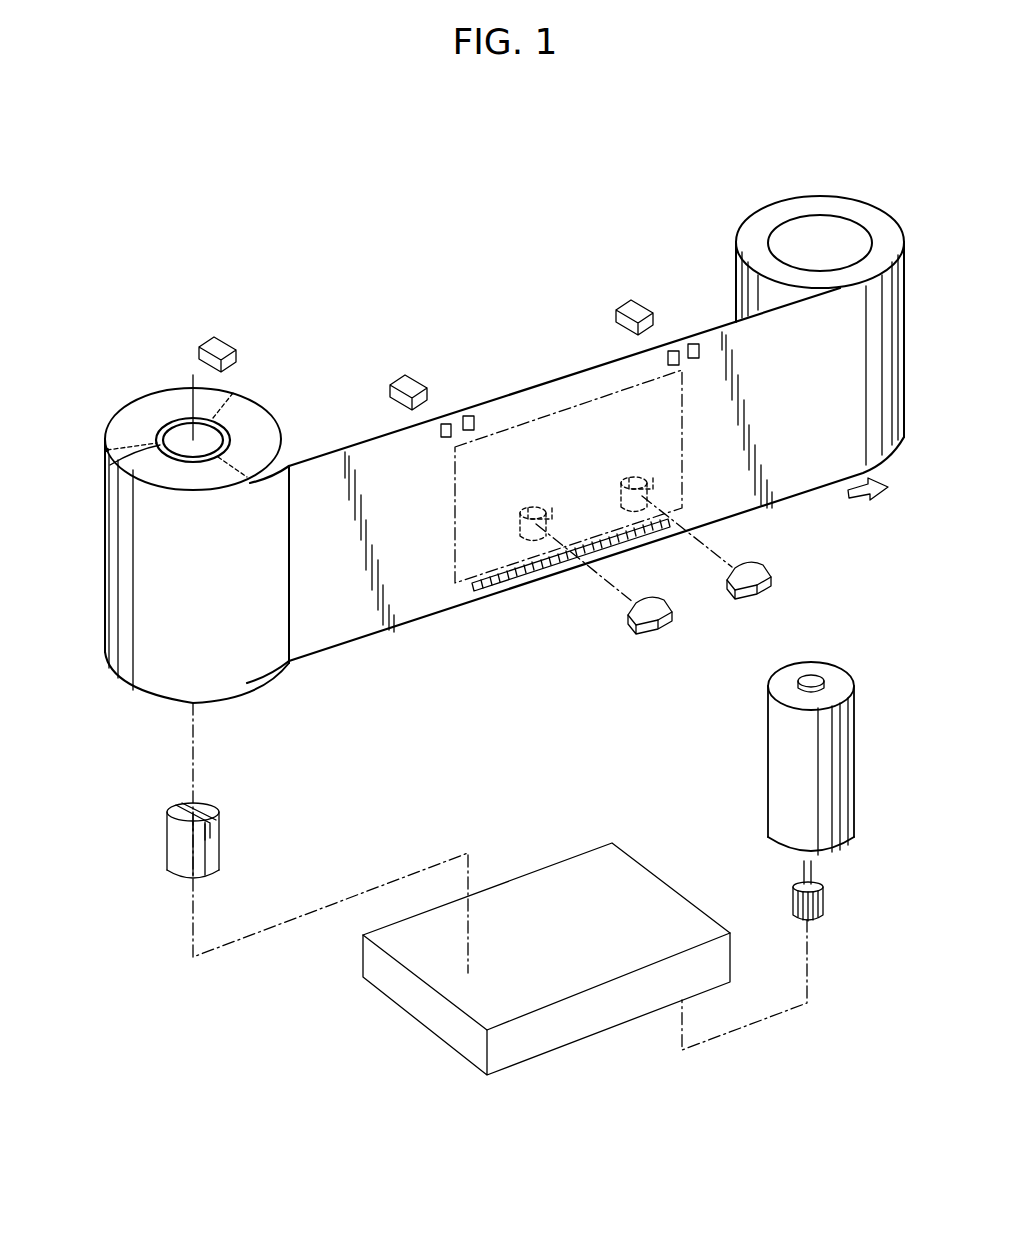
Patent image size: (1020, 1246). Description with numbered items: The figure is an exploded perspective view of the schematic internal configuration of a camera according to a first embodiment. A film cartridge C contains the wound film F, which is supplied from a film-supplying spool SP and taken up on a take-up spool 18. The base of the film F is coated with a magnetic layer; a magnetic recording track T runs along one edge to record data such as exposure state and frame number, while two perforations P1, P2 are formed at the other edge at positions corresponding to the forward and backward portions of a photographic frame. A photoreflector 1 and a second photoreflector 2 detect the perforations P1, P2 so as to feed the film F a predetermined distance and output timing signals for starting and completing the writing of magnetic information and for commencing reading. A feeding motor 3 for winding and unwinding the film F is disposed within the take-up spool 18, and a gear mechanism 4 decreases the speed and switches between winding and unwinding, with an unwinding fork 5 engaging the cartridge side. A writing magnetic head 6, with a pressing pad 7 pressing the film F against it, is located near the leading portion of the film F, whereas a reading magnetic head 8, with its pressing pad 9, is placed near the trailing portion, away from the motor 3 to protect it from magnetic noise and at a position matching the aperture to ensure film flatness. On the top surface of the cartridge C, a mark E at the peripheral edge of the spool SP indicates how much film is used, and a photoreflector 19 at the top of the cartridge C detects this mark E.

The photoreflector 1 is at (632, 308).
The photoreflector 2 is at (408, 380).
The feeding motor 3 is at (854, 797).
The gear mechanism 4 is at (580, 1027).
The unwinding fork 5 is at (175, 857).
The writing magnetic head 6 is at (765, 568).
The pressing pad 7 is at (646, 474).
The reading magnetic head 8 is at (647, 634).
The pressing pad 9 is at (540, 507).
The take-up spool 18 is at (838, 203).
The photoreflector 19 is at (225, 343).
The film cartridge C is at (125, 598).
The film-supplying spool SP is at (170, 420).
The mark E is at (107, 450).
The film F is at (877, 384).
The track T is at (512, 592).
The perforation P1 is at (475, 428).
The perforation P2 is at (668, 360).